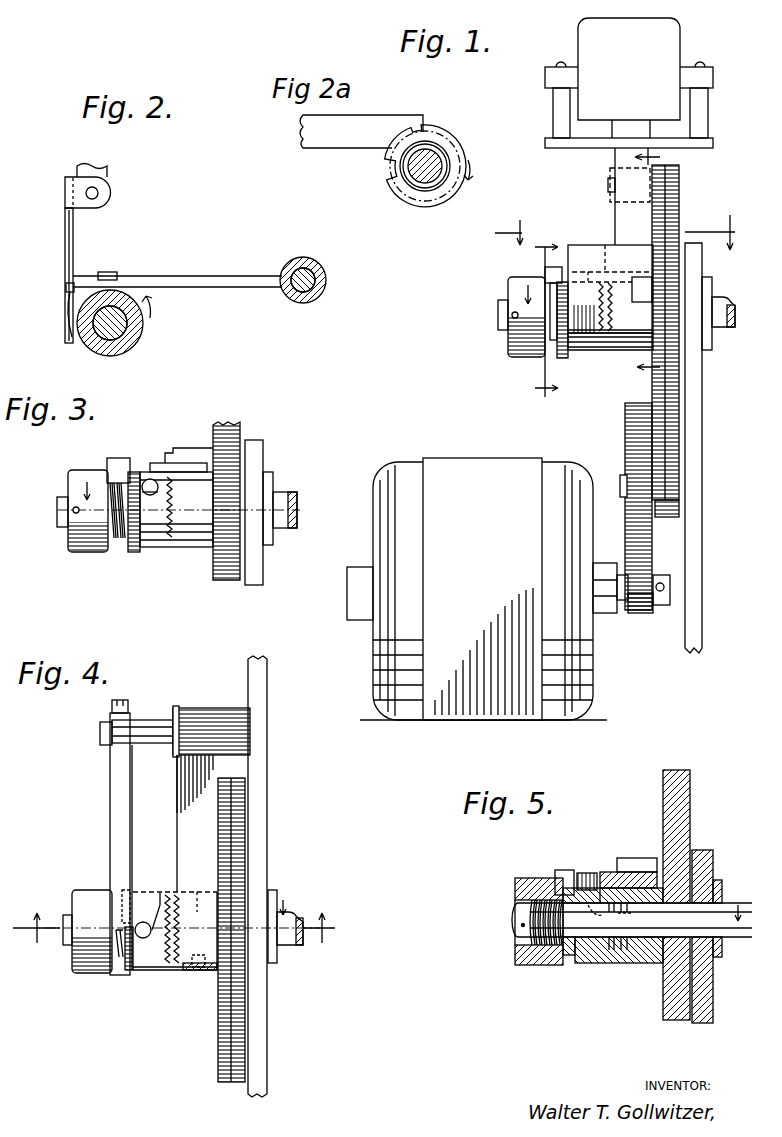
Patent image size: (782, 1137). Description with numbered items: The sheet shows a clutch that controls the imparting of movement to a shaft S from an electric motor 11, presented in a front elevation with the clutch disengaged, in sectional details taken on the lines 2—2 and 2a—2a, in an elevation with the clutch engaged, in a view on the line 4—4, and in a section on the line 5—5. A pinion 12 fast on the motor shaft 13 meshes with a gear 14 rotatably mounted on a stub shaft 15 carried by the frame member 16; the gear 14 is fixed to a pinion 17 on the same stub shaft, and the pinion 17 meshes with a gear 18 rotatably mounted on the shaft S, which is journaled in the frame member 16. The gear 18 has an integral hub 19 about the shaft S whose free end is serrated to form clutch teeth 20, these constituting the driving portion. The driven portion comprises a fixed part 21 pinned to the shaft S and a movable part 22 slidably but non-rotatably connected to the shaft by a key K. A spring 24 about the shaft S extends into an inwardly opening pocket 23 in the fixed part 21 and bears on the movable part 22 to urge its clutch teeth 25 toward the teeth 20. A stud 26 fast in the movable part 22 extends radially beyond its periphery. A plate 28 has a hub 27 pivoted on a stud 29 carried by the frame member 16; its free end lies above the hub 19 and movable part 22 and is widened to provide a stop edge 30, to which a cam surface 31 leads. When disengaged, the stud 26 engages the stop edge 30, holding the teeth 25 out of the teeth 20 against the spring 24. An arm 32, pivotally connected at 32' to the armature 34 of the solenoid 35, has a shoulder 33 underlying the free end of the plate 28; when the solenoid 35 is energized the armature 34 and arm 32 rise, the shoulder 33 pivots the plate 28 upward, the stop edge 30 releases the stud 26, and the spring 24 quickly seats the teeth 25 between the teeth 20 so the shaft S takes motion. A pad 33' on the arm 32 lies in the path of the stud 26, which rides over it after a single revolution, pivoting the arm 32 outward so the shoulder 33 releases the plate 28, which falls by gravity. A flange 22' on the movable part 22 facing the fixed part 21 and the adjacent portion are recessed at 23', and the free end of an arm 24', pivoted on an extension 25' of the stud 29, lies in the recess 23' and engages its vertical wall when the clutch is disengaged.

In FIG. 1, the electric motor 11 is at (471, 462).
In FIG. 1, the pinion 12 is at (642, 613).
In FIG. 1, the motor shaft 13 is at (622, 603).
In FIG. 1, the gear 14 is at (626, 430).
In FIG. 1, the stub shaft 15 is at (620, 480).
In FIG. 1, the frame member 16 is at (703, 528).
In FIG. 3, the frame member 16 is at (259, 446).
In FIG. 4, the frame member 16 is at (262, 835).
In FIG. 5, the frame member 16 is at (714, 981).
In FIG. 1, the pinion 17 is at (668, 517).
In FIG. 1, the gear 18 is at (656, 385).
In FIG. 3, the gear 18 is at (230, 423).
In FIG. 4, the gear 18 is at (233, 798).
In FIG. 5, the gear 18 is at (690, 805).
In FIG. 1, the hub 19 is at (610, 341).
In FIG. 3, the hub 19 is at (196, 547).
In FIG. 4, the hub 19 is at (197, 892).
In FIG. 5, the hub 19 is at (650, 963).
In FIG. 1, the clutch teeth 20 is at (612, 325).
In FIG. 3, the clutch teeth 20 is at (175, 500).
In FIG. 4, the clutch teeth 20 is at (170, 894).
In FIG. 5, the clutch teeth 20 is at (625, 963).
In FIG. 1, the fixed part 21 is at (508, 292).
In FIG. 3, the fixed part 21 is at (82, 553).
In FIG. 4, the fixed part 21 is at (86, 974).
In FIG. 5, the fixed part 21 is at (520, 880).
In FIG. 2, the movable part 22 is at (116, 334).
In FIG. 2A, the movable part 22 is at (408, 185).
In FIG. 1, the movable part 22 is at (562, 330).
In FIG. 3, the movable part 22 is at (124, 522).
In FIG. 4, the movable part 22 is at (78, 923).
In FIG. 5, the movable part 22 is at (609, 949).
In FIG. 2A, the flange 22' is at (426, 218).
In FIG. 1, the flange 22' is at (524, 368).
In FIG. 3, the flange 22' is at (102, 572).
In FIG. 4, the flange 22' is at (98, 998).
In FIG. 5, the flange 22' is at (570, 938).
In FIG. 5, the pocket 23 is at (543, 871).
In FIG. 2A, the recess 23' is at (445, 108).
In FIG. 3, the recess 23' is at (88, 493).
In FIG. 4, the recess 23' is at (104, 910).
In FIG. 5, the recess 23' is at (593, 915).
In FIG. 2A, the spring 24 is at (440, 166).
In FIG. 4, the spring 24 is at (110, 965).
In FIG. 5, the spring 24 is at (520, 933).
In FIG. 2, the arm 24' is at (69, 275).
In FIG. 2A, the arm 24' is at (361, 147).
In FIG. 1, the arm 24' is at (515, 296).
In FIG. 3, the arm 24' is at (113, 455).
In FIG. 4, the arm 24' is at (94, 844).
In FIG. 5, the arm 24' is at (555, 864).
In FIG. 1, the clutch teeth 25 is at (610, 358).
In FIG. 3, the clutch teeth 25 is at (155, 560).
In FIG. 4, the clutch teeth 25 is at (153, 852).
In FIG. 5, the clutch teeth 25 is at (597, 944).
In FIG. 4, the extension 25' is at (86, 724).
In FIG. 2, the stud 26 is at (110, 273).
In FIG. 1, the stud 26 is at (584, 311).
In FIG. 3, the stud 26 is at (150, 479).
In FIG. 4, the stud 26 is at (143, 940).
In FIG. 5, the stud 26 is at (586, 873).
In FIG. 2, the hub 27 is at (315, 264).
In FIG. 4, the hub 27 is at (212, 710).
In FIG. 2, the plate 28 is at (218, 277).
In FIG. 1, the plate 28 is at (607, 245).
In FIG. 3, the plate 28 is at (186, 463).
In FIG. 4, the plate 28 is at (177, 792).
In FIG. 5, the plate 28 is at (605, 872).
In FIG. 2, the stud 29 is at (326, 283).
In FIG. 4, the stud 29 is at (173, 718).
In FIG. 5, the stud 29 is at (620, 858).
In FIG. 4, the stop edge 30 is at (161, 966).
In FIG. 4, the cam surface 31 is at (160, 896).
In FIG. 1, the arm 32 is at (599, 196).
In FIG. 4, the arm 32 is at (195, 995).
In FIG. 2, the pivotal connection 32' is at (123, 189).
In FIG. 1, the pivotal connection 32' is at (601, 185).
In FIG. 2, the shoulder 33 is at (48, 307).
In FIG. 1, the shoulder 33 is at (637, 272).
In FIG. 4, the shoulder 33 is at (204, 980).
In FIG. 1, the pad 33' is at (612, 265).
In FIG. 4, the pad 33' is at (140, 1005).
In FIG. 2, the armature 34 is at (104, 165).
In FIG. 1, the armature 34 is at (590, 148).
In FIG. 1, the solenoid 35 is at (672, 47).
In FIG. 2, the shaft S is at (118, 326).
In FIG. 2A, the shaft S is at (432, 160).
In FIG. 1, the shaft S is at (721, 330).
In FIG. 3, the shaft S is at (288, 498).
In FIG. 4, the shaft S is at (291, 913).
In FIG. 5, the shaft S is at (737, 902).
In FIG. 5, the key K is at (630, 915).
In FIG. 1, the section line 2— 2 is at (654, 269).
In FIG. 1, the section line 2a— 2a is at (546, 321).
In FIG. 1, the section line 4— 4 is at (620, 232).
In FIG. 4, the section line 5— 5 is at (174, 928).